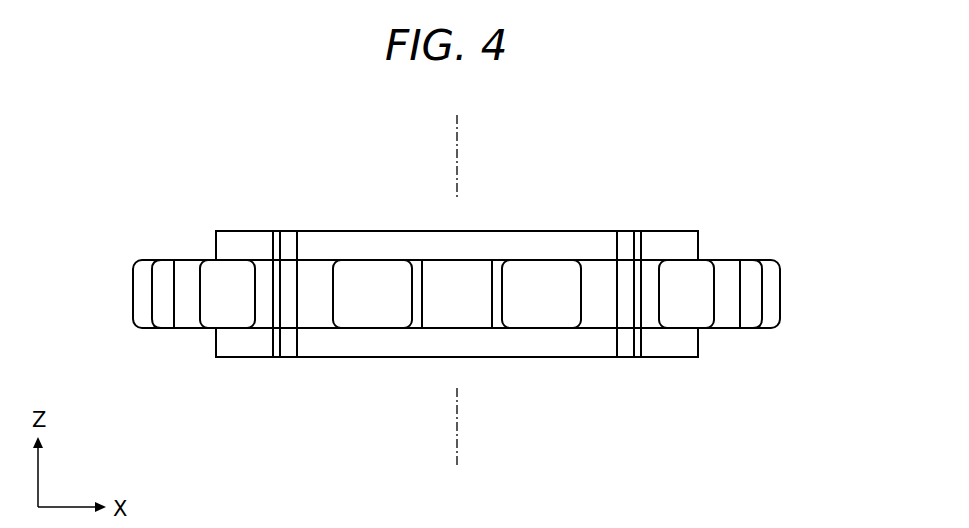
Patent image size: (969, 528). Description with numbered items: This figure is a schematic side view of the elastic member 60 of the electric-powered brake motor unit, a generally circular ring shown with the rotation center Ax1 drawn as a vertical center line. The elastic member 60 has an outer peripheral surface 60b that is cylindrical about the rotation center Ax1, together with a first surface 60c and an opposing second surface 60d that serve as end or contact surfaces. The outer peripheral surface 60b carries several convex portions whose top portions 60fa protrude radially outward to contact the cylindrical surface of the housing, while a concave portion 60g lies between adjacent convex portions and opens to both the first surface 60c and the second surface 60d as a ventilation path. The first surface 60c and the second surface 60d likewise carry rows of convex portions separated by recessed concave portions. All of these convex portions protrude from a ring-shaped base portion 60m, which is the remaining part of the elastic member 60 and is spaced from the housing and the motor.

The elastic member 60 is at (812, 157).
The outer peripheral surface 60b is at (780, 282).
The first surface 60c is at (190, 258).
The second surface 60d is at (190, 329).
The top portion 60fa is at (133, 290).
The concave portion 60g is at (438, 315).
The base portion 60m is at (720, 260).
The rotation center Ax1 is at (457, 440).